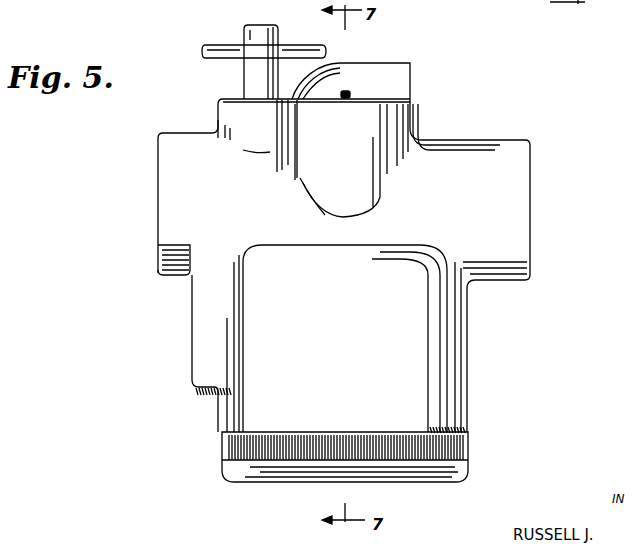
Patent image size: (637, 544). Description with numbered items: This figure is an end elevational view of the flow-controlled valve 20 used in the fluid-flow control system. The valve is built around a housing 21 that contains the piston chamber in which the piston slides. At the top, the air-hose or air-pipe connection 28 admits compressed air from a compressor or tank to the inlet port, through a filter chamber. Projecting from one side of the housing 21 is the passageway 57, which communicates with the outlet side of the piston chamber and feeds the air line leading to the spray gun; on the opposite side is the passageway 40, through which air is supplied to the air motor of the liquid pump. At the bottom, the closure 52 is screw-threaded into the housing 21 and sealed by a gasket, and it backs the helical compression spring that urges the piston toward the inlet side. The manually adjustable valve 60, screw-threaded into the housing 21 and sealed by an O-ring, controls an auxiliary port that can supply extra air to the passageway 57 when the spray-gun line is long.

The flow-controlled valve 20 is at (550, 57).
The housing 21 is at (450, 338).
The air-hose or air-pipe connection 28 is at (413, 92).
The passageway 40 is at (531, 207).
The closure 52 is at (237, 448).
The passageway 57 is at (158, 200).
The manually adjustable valve 60 is at (258, 80).